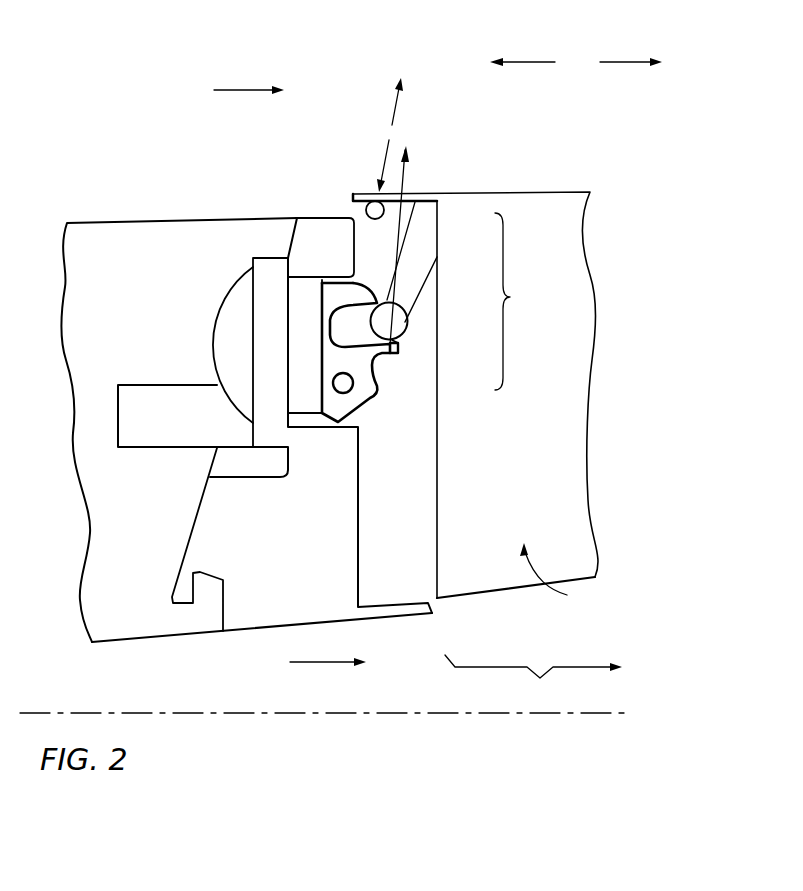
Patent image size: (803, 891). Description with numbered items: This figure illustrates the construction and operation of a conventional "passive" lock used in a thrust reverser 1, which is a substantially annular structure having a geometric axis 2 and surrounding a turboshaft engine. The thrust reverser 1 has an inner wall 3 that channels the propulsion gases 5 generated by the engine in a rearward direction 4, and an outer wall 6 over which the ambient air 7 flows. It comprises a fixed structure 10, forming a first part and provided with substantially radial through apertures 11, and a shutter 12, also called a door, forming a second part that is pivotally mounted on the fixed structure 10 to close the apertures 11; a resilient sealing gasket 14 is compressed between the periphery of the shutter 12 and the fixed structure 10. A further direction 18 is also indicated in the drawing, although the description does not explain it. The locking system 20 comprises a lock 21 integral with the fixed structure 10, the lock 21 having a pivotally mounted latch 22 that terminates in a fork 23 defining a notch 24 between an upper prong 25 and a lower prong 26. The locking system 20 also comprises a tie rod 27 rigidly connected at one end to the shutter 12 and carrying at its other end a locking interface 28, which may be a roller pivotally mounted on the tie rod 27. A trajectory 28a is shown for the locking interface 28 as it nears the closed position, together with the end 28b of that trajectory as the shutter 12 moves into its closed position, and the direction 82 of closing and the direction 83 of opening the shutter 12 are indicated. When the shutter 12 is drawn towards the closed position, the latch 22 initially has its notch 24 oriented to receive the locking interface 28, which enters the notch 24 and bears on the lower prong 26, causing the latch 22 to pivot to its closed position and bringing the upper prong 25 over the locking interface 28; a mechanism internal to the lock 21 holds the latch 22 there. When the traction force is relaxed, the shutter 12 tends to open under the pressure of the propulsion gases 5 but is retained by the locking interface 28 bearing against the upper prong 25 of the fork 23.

The thrust reverser 1 is at (190, 147).
The geometric axis 2 is at (245, 712).
The inner wall 3 is at (192, 636).
The rearward direction 4 is at (618, 62).
The propulsion gases 5 is at (317, 658).
The outer wall 6 is at (153, 222).
The ambient air 7 is at (232, 88).
The fixed structure 10 is at (218, 530).
The through apertures 11 is at (533, 680).
The shutter 12 is at (554, 579).
The resilient sealing gasket 14 is at (370, 204).
The direction of movement 18 is at (540, 62).
The locking system 20 is at (518, 301).
The lock 21 is at (246, 340).
The latch 22 is at (335, 303).
The fork 23 is at (373, 260).
The notch 24 is at (352, 342).
The upper prong 25 is at (350, 292).
The lower prong 26 is at (400, 347).
The tie rod 27 is at (418, 249).
The locking interface 28 is at (410, 322).
The trajectory 28a is at (404, 185).
The end of the trajectory 28b is at (398, 343).
The direction of closing 82 is at (387, 150).
The direction of opening 83 is at (393, 108).